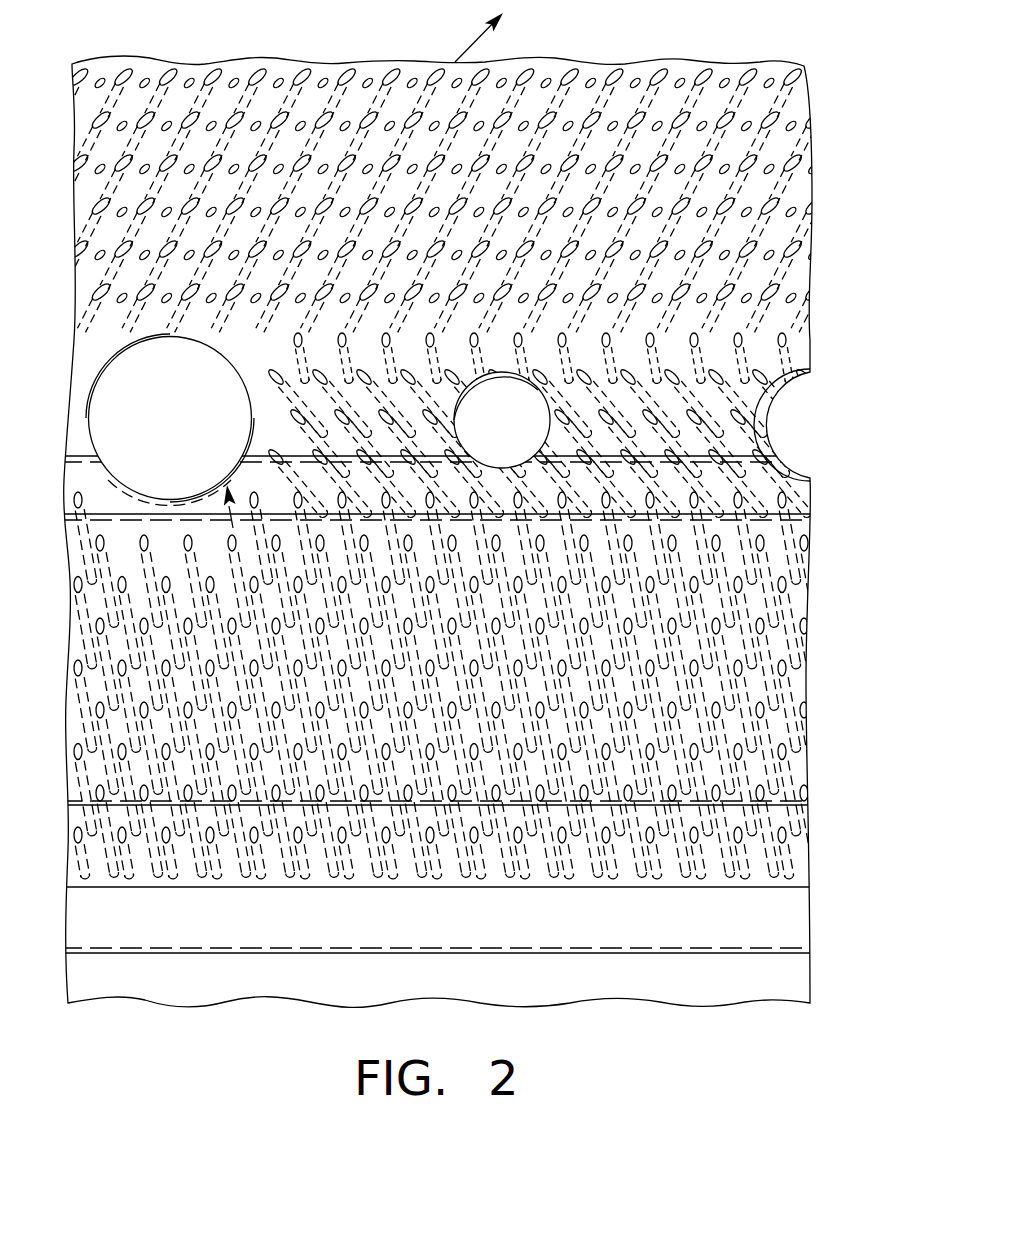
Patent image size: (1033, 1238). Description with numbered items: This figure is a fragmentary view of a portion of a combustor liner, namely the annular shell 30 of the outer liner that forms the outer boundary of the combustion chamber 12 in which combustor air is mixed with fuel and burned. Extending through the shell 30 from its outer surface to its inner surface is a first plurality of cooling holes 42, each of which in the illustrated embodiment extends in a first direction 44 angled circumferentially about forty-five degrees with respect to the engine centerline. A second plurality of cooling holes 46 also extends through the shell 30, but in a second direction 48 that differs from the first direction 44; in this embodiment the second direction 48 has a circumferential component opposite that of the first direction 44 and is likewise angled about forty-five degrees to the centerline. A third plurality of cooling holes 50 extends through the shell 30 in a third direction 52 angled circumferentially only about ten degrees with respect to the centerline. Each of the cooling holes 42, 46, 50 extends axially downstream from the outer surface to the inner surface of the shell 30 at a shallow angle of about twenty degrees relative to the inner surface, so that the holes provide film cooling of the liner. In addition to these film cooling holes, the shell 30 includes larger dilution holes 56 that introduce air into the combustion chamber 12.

The combustion chamber 12 is at (544, 503).
The annular shell 30 is at (812, 147).
The first plurality of cooling holes 42 is at (792, 248).
The first direction 44 is at (455, 62).
The second plurality of cooling holes 46 is at (735, 447).
The second direction 48 is at (257, 356).
The third plurality of cooling holes 50 is at (780, 745).
The third direction 52 is at (233, 528).
The dilution holes 56 is at (770, 403).